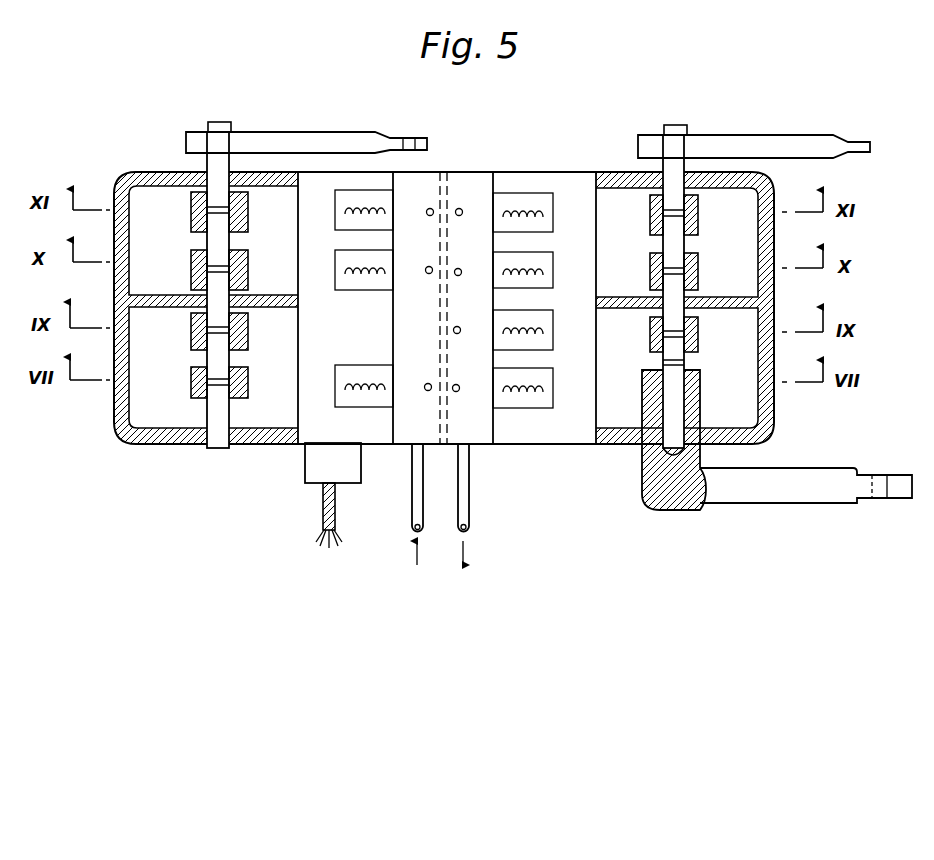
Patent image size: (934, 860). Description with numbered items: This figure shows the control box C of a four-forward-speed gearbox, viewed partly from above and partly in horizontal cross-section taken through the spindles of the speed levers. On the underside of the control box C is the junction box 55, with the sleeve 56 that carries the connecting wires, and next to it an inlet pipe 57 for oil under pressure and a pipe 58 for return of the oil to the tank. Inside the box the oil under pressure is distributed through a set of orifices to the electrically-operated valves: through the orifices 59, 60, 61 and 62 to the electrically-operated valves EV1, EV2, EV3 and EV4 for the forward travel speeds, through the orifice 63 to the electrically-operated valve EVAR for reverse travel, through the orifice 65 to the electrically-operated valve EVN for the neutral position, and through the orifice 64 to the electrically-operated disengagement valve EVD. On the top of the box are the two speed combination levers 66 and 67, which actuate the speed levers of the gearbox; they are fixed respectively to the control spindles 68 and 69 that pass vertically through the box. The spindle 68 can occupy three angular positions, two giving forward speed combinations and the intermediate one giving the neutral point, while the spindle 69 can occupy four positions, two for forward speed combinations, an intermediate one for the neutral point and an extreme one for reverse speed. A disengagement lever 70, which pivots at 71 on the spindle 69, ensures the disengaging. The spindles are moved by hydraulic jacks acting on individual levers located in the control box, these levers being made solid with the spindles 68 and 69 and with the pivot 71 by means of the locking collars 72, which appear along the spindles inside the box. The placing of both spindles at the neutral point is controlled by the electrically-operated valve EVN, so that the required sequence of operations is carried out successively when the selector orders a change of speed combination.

The control box C is at (535, 173).
The junction box 55 is at (333, 463).
The sleeve of the connecting wires 56 is at (322, 511).
The inlet pipe for oil under pressure 57 is at (412, 500).
The pipe for return to the tank 58 is at (478, 492).
The orifice 59 is at (427, 213).
The orifice 60 is at (471, 212).
The orifice 61 is at (426, 273).
The orifice 62 is at (461, 275).
The orifice 63 is at (425, 390).
The orifice 64 is at (459, 391).
The orifice 65 is at (473, 333).
The speed combination lever 66 is at (296, 141).
The speed combination lever 67 is at (788, 142).
The control spindle 68 is at (208, 284).
The control spindle 69 is at (675, 245).
The disengagement lever 70 is at (791, 496).
The pivot 71 is at (700, 398).
The locking collar 72 is at (246, 219).
The electrically-operated valve EV1 is at (335, 213).
The electrically-operated valve EV2 is at (543, 217).
The electrically-operated valve EV3 is at (335, 272).
The electrically-operated valve EV4 is at (543, 274).
The electrically-operated valve for neutral position EVN is at (543, 342).
The electrically-operated disengagement valve EVD is at (543, 398).
The electrically-operated valve for reverse travel EVAR is at (335, 391).